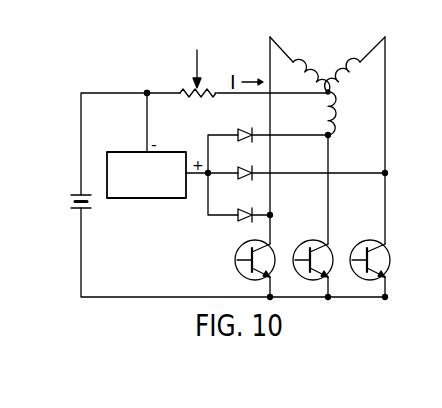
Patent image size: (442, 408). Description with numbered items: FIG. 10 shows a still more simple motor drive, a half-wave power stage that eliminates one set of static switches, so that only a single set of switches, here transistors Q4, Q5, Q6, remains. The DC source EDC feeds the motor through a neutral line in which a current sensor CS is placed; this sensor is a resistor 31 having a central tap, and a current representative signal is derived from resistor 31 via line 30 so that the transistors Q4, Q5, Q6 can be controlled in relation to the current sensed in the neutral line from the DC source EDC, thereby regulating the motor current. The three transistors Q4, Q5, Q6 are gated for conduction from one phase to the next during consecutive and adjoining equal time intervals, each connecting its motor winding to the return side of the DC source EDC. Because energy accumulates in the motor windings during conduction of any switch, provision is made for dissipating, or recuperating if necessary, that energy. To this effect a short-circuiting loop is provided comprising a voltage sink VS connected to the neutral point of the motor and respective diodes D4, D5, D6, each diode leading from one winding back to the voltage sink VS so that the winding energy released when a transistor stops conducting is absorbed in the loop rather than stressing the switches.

The line 30 is at (194, 53).
The resistor 31 is at (178, 88).
The current sensor CS is at (183, 99).
The voltage sink VS is at (127, 149).
The DC source EDC is at (93, 207).
The diode D4 is at (243, 209).
The diode D5 is at (243, 128).
The diode D6 is at (243, 167).
The transistor Q4 is at (247, 245).
The transistor Q5 is at (306, 243).
The transistor Q6 is at (364, 243).